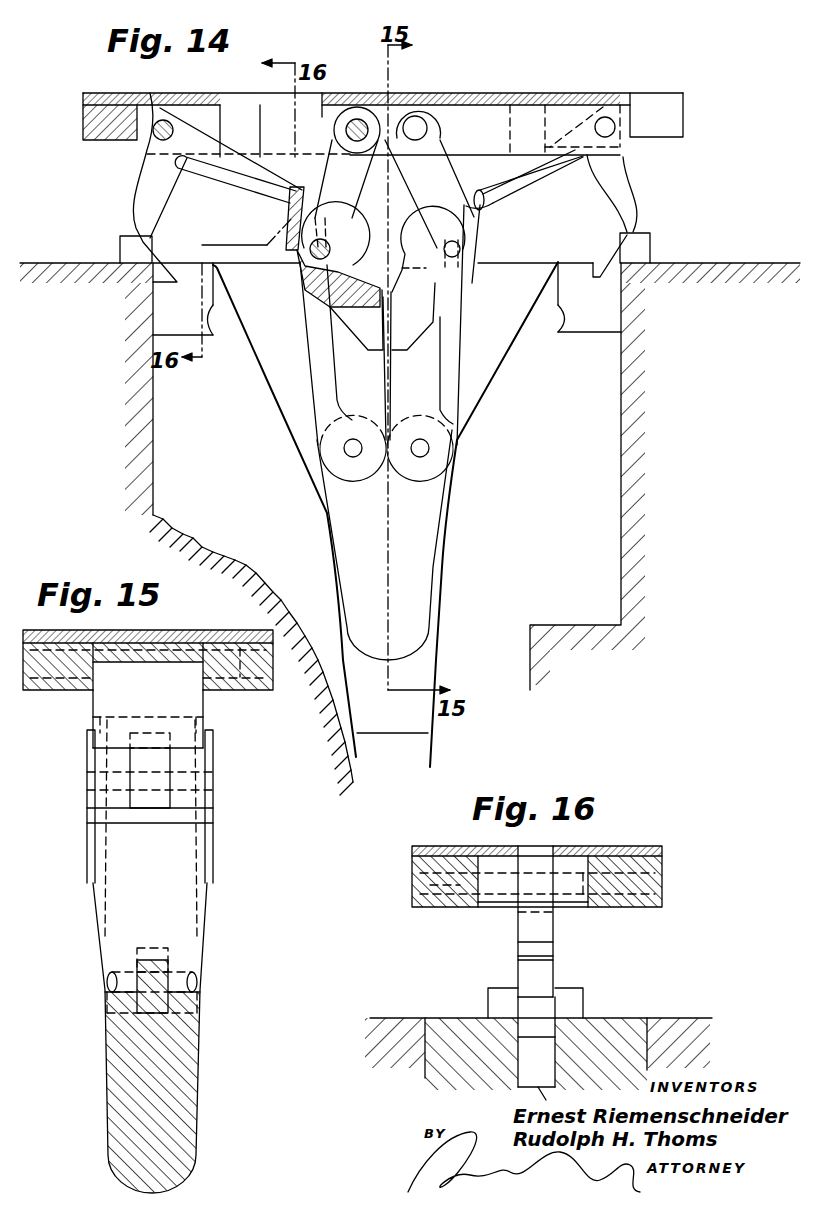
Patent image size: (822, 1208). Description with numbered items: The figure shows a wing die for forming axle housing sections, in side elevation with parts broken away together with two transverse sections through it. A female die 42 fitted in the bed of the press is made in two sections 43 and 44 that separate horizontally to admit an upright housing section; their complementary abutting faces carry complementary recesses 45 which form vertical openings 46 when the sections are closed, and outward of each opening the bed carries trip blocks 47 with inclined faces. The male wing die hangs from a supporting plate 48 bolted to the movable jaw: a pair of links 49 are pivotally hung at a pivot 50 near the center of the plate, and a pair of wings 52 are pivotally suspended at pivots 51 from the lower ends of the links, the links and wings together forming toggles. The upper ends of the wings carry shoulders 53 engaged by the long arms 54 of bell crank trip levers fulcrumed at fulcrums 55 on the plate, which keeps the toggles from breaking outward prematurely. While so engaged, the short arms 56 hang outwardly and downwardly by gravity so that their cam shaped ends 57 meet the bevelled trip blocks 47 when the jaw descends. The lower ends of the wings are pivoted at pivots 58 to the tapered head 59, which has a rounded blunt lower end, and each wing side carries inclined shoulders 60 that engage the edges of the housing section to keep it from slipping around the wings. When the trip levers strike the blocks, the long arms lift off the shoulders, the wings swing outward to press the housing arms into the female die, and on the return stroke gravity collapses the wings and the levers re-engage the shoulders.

In FIG. 14, the female die 42 is at (385, 514).
In FIG. 16, the die section 43 is at (450, 1040).
In FIG. 16, the die section 44 is at (625, 1052).
In FIG. 14, the complementary recess 45 is at (213, 332).
In FIG. 16, the complementary recess 45 is at (518, 1052).
In FIG. 16, the vertical opening 46 is at (540, 1058).
In FIG. 14, the trip block 47 is at (128, 246).
In FIG. 16, the trip block 47 is at (523, 1005).
In FIG. 14, the supporting plate 48 is at (525, 110).
In FIG. 15, the supporting plate 48 is at (185, 642).
In FIG. 16, the supporting plate 48 is at (618, 847).
In FIG. 14, the link 49 is at (422, 190).
In FIG. 15, the link 49 is at (195, 701).
In FIG. 14, the pivot 50 is at (414, 117).
In FIG. 14, the pivot 51 is at (305, 270).
In FIG. 15, the pivot 51 is at (183, 781).
In FIG. 14, the wing 52 is at (318, 332).
In FIG. 15, the wing 52 is at (175, 910).
In FIG. 14, the shoulder 53 is at (493, 205).
In FIG. 14, the long arm 54 is at (263, 183).
In FIG. 16, the long arm 54 is at (548, 931).
In FIG. 14, the fulcrum 55 is at (160, 122).
In FIG. 16, the fulcrum 55 is at (430, 885).
In FIG. 14, the short arm 56 is at (152, 198).
In FIG. 16, the short arm 56 is at (548, 976).
In FIG. 14, the cam shaped end 57 is at (644, 216).
In FIG. 14, the pivot 58 is at (420, 452).
In FIG. 15, the pivot 58 is at (198, 982).
In FIG. 14, the tapered head 59 is at (384, 545).
In FIG. 15, the tapered head 59 is at (190, 1058).
In FIG. 14, the inclined shoulder 60 is at (441, 298).
In FIG. 15, the inclined shoulder 60 is at (86, 846).